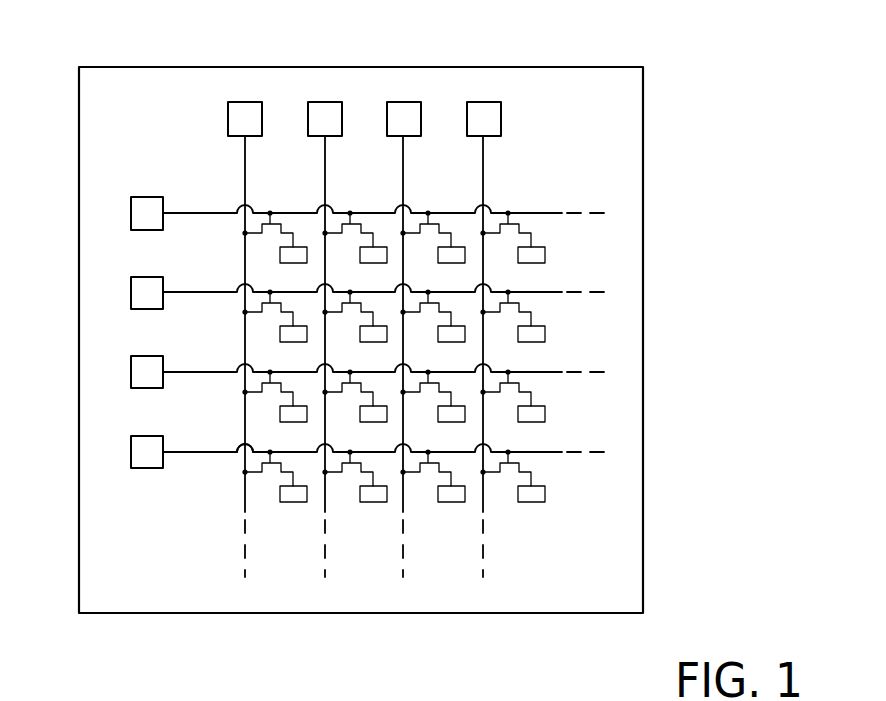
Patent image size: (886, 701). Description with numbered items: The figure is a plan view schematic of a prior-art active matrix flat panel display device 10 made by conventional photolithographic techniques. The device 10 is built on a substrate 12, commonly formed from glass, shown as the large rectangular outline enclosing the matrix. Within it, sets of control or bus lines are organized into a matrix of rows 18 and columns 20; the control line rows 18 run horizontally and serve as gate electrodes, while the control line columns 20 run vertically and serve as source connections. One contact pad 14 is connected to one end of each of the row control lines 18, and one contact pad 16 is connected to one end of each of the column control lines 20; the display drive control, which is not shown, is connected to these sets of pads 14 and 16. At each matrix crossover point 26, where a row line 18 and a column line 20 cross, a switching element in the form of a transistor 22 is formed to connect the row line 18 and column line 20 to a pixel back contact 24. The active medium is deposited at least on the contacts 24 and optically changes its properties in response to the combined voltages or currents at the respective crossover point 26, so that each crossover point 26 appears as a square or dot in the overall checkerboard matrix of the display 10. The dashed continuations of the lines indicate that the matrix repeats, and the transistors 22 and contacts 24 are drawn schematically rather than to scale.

The active matrix flat panel display device 10 is at (663, 420).
The substrate 12 is at (583, 570).
The contact pads 14 is at (131, 457).
The contact pads 16 is at (467, 120).
The control line rows 18 is at (185, 291).
The control line columns 20 is at (325, 173).
The transistor 22 is at (518, 390).
The pixel back contacts 24 is at (545, 258).
The matrix crossover point 26 is at (236, 455).